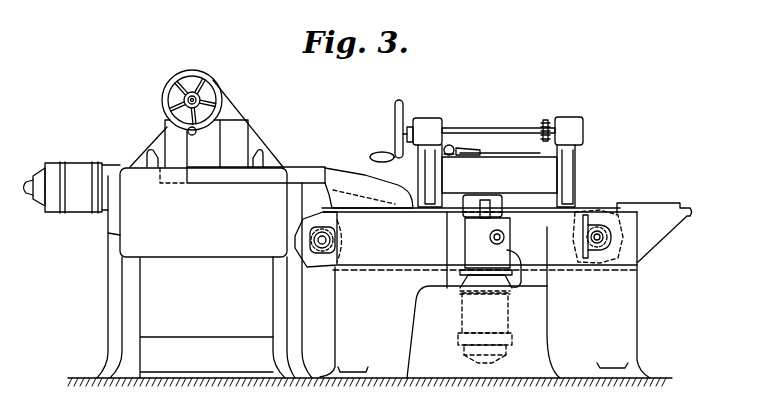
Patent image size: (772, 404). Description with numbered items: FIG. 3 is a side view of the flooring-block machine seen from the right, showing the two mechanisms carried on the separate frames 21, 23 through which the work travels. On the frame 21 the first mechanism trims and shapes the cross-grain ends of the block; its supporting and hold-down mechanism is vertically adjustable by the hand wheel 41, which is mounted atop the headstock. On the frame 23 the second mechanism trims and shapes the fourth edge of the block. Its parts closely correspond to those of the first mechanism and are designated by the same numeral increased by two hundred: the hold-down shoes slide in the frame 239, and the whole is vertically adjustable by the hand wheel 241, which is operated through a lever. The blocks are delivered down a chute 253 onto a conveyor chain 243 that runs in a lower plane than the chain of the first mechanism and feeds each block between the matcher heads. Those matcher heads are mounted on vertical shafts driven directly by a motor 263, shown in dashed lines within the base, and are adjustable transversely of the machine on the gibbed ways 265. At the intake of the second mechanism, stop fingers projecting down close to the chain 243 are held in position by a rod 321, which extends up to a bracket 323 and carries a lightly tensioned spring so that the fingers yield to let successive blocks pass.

The frame 21 is at (108, 297).
The frame 23 is at (618, 309).
The hand wheel 41 is at (219, 88).
The frame 239 is at (565, 172).
The hand wheel 241 is at (401, 104).
The conveyor chain 243 is at (350, 268).
The chute 253 is at (350, 160).
The motor 263 is at (476, 306).
The gibbed ways 265 is at (512, 208).
The rod 321 is at (451, 146).
The bracket 323 is at (468, 150).